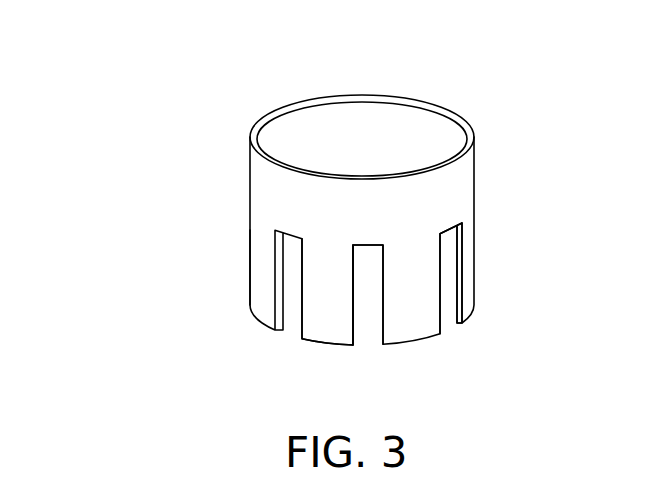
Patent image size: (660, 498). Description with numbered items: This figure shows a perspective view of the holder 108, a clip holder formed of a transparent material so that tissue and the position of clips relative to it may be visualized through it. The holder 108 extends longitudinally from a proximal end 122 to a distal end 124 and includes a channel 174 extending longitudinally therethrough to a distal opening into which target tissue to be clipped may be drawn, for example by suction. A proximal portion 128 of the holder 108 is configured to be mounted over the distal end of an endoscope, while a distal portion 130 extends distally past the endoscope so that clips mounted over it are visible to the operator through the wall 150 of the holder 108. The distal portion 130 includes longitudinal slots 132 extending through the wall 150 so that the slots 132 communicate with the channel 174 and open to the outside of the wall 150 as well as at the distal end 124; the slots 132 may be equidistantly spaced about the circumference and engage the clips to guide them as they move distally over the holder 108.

The holder 108 is at (356, 222).
The proximal end 122 is at (252, 148).
The distal end 124 is at (247, 285).
The proximal portion 128 is at (463, 187).
The distal portion 130 is at (323, 305).
The longitudinal slots 132 is at (362, 330).
The wall 150 is at (460, 270).
The channel 174 is at (370, 118).